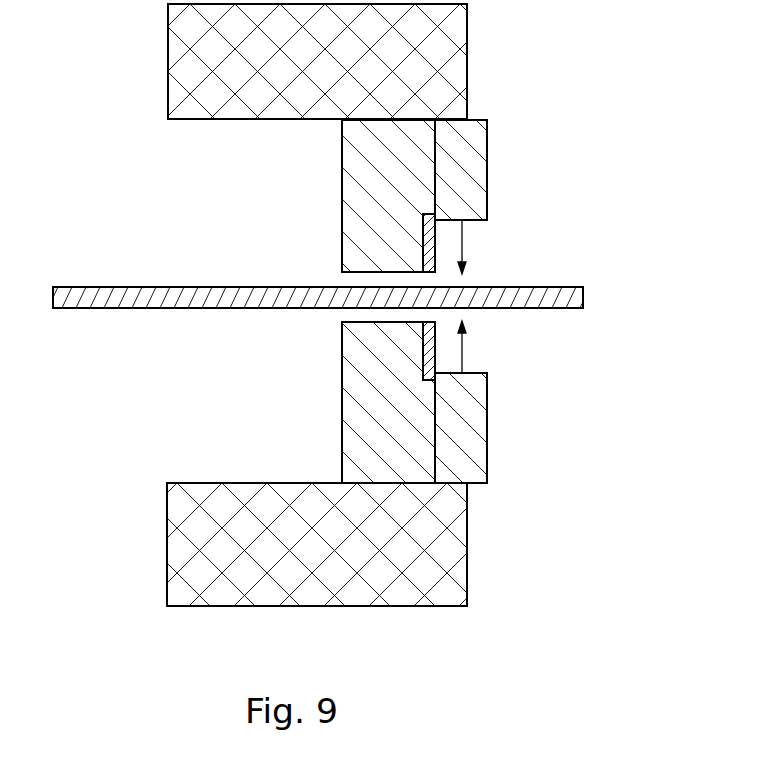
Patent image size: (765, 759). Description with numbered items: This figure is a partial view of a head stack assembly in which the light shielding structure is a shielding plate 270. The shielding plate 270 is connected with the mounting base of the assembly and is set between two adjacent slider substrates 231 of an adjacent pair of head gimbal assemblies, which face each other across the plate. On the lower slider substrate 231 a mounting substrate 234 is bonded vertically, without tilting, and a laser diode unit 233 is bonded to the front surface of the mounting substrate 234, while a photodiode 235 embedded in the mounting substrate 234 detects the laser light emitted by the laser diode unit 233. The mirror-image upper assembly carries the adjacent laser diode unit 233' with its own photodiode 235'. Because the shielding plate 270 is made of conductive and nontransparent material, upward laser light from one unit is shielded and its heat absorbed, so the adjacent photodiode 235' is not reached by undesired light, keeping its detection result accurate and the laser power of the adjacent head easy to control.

The slider substrate 231 is at (407, 550).
The laser diode unit 233 is at (526, 428).
The adjacent laser diode unit 233' is at (532, 170).
The mounting substrate 234 is at (390, 433).
The photodiode 235 is at (520, 351).
The adjacent photodiode 235' is at (529, 237).
The shielding plate 270 is at (563, 298).